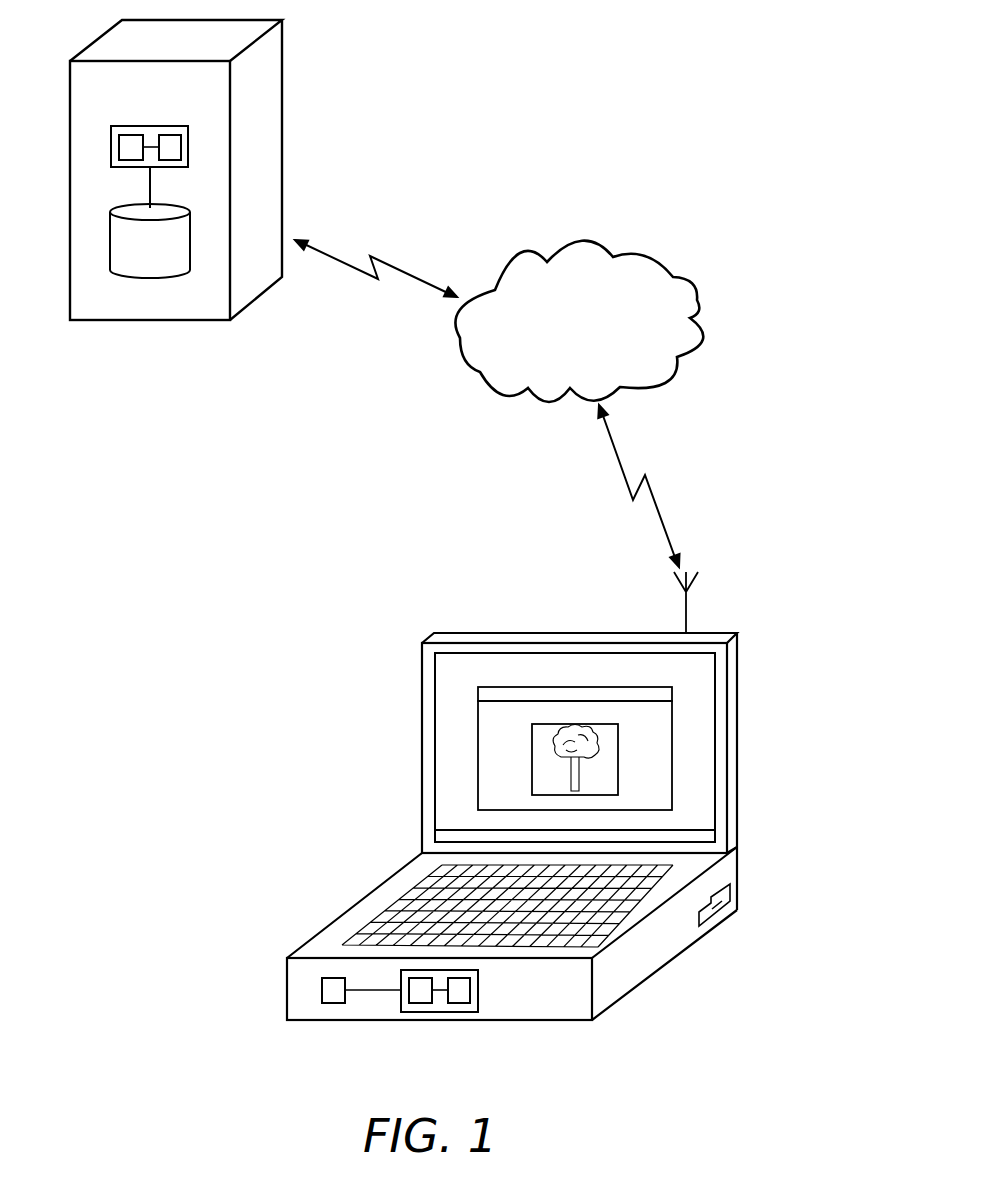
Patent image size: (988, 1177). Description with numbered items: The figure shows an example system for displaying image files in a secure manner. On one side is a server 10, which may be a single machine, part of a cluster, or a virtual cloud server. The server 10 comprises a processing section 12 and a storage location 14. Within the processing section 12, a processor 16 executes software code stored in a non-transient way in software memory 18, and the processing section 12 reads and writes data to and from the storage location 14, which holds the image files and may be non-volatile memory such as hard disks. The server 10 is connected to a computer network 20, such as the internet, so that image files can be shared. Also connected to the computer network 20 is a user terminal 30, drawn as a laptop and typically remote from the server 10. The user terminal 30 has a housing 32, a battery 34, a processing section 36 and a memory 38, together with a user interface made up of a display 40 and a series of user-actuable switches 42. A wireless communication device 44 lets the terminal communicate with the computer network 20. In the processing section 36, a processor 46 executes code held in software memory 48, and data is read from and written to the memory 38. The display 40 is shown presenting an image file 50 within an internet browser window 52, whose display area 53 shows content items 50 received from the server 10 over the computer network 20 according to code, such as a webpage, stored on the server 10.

The server 10 is at (300, 37).
The processing section 12 is at (111, 148).
The storage location 14 is at (150, 278).
The processor 16 is at (128, 135).
The software memory 18 is at (167, 135).
The computer network 20 is at (566, 332).
The user terminal 30 is at (765, 653).
The housing 32 is at (737, 800).
The battery 34 is at (716, 912).
The processing section 36 is at (478, 988).
The memory 38 is at (337, 1004).
The display 40 is at (698, 745).
The user-actuable switches 42 is at (425, 905).
The wireless communication device 44 is at (687, 604).
The processor 46 is at (460, 1004).
The software memory 48 is at (420, 1004).
The image file 50 is at (542, 777).
The internet browser window 52 is at (495, 693).
The display area 53 is at (490, 725).